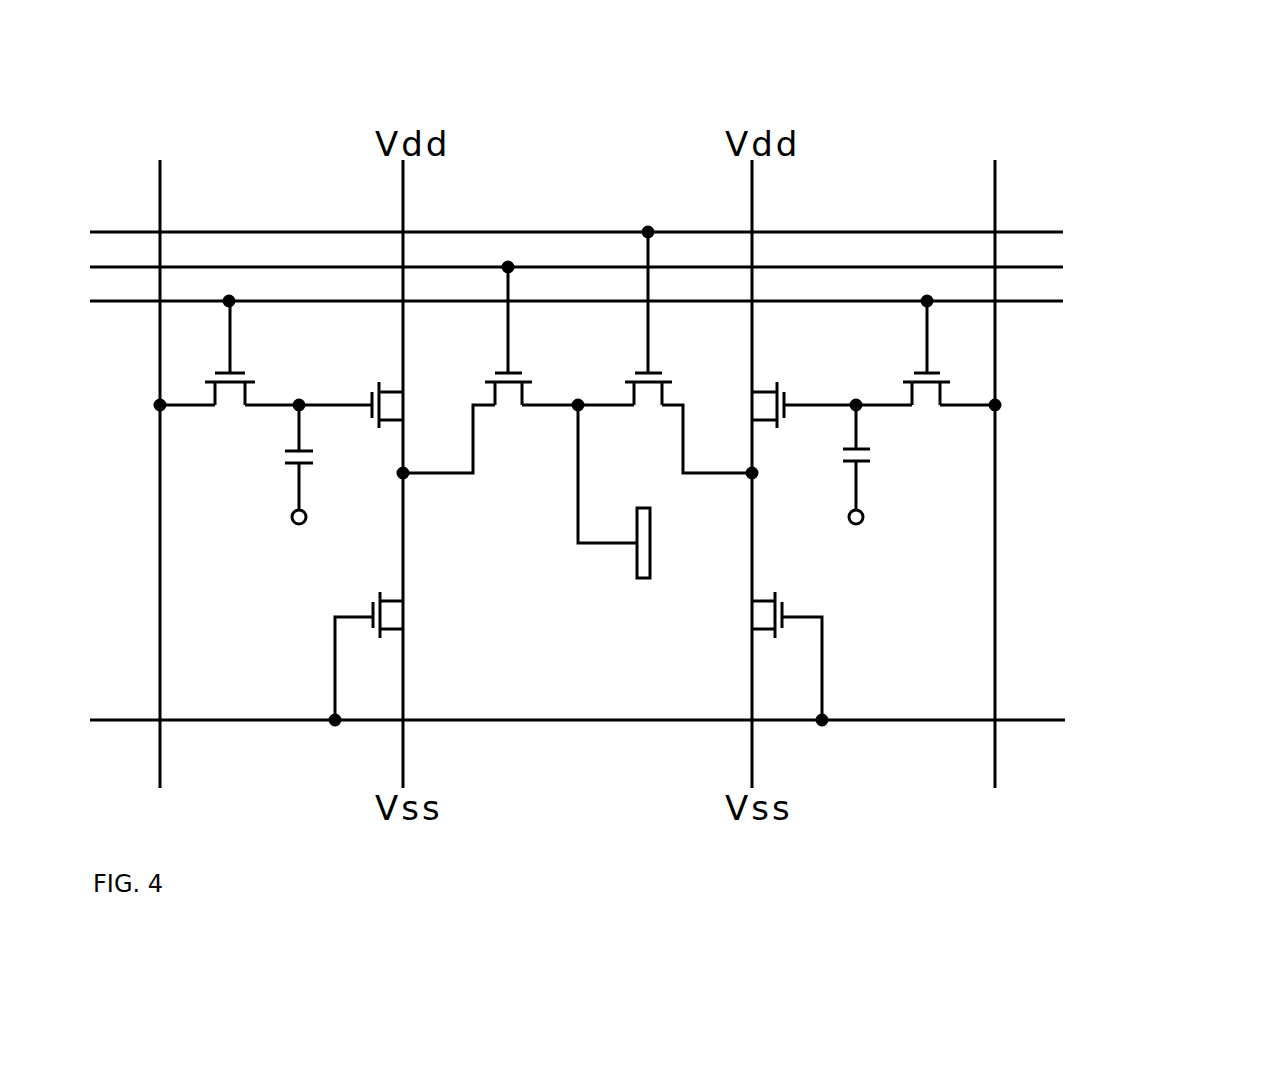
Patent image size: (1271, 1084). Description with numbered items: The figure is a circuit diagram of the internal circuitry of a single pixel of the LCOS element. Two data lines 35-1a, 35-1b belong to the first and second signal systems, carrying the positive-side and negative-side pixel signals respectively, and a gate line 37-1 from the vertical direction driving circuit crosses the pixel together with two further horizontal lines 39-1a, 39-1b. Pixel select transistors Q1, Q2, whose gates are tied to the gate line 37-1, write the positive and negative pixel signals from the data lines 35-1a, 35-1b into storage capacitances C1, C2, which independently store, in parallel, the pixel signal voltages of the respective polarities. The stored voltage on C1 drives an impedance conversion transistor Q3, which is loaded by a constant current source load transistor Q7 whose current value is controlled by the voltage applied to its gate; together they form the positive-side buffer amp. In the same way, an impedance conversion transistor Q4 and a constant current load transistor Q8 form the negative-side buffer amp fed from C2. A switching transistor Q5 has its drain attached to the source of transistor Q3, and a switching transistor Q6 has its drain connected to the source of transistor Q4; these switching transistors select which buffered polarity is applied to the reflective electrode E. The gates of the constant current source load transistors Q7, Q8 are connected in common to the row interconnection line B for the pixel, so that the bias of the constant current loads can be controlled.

The data line 35-1a is at (164, 456).
The data line 35-1b is at (1000, 456).
The first control line 39-1a is at (1035, 232).
The second control line 39-1b is at (1060, 267).
The gate line 37-1 is at (1045, 301).
The pixel select transistor Q1 is at (263, 353).
The pixel select transistor Q2 is at (931, 353).
The impedance conversion transistor Q3 is at (371, 382).
The impedance conversion transistor Q4 is at (832, 382).
The switching transistor Q5 is at (539, 333).
The switching transistor Q6 is at (671, 352).
The constant current source load transistor Q7 is at (366, 634).
The constant current load transistor Q8 is at (789, 634).
The storage capacitance C1 is at (328, 462).
The storage capacitance C2 is at (885, 462).
The reflective electrode E is at (636, 580).
The row interconnection line B is at (594, 716).